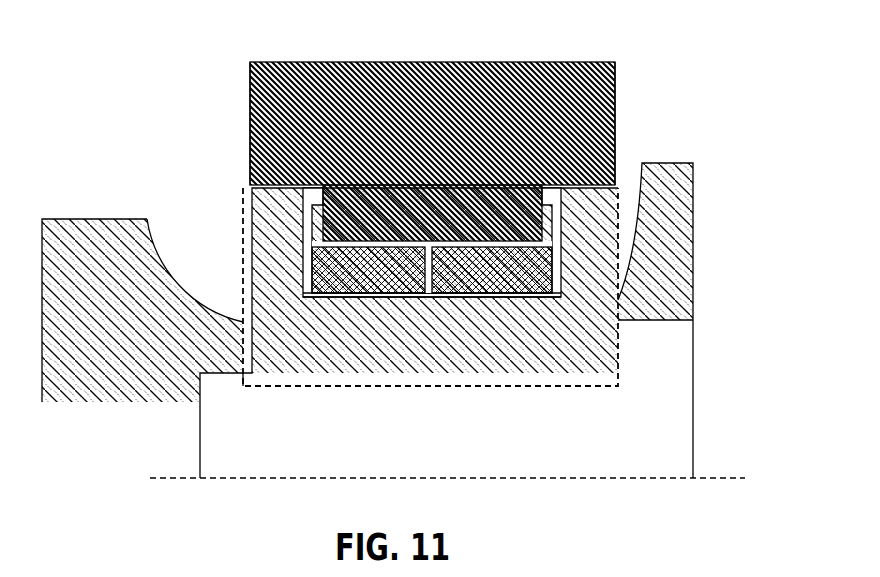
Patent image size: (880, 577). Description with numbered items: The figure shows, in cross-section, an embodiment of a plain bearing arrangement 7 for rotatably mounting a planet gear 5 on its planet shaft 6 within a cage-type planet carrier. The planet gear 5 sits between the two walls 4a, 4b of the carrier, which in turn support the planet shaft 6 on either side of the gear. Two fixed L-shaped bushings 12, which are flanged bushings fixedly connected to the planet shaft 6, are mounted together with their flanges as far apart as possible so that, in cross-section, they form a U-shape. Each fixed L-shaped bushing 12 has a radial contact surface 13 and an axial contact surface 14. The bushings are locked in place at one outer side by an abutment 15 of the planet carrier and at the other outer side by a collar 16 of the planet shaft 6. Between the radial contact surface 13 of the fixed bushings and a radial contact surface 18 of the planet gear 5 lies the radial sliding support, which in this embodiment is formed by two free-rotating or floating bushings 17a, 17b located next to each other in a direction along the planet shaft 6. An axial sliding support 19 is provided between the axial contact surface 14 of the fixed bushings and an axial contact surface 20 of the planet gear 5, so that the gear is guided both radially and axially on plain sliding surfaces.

The wall 4a is at (104, 228).
The wall 4b is at (692, 186).
The planet gear 5 is at (566, 62).
The planet shaft 6 is at (663, 437).
The plain bearing arrangement 7 is at (621, 278).
The fixed L-shaped bushing 12 is at (248, 253).
The radial contact surface 13 is at (455, 297).
The axial contact surface 14 is at (243, 200).
The abutment 15 is at (213, 332).
The collar 16 is at (653, 358).
The free-rotating or floating bushing 17a is at (362, 281).
The free-rotating or floating bushing 17b is at (540, 283).
The radial contact surface 18 is at (492, 200).
The axial sliding support 19 is at (249, 182).
The axial contact surface 20 is at (393, 172).